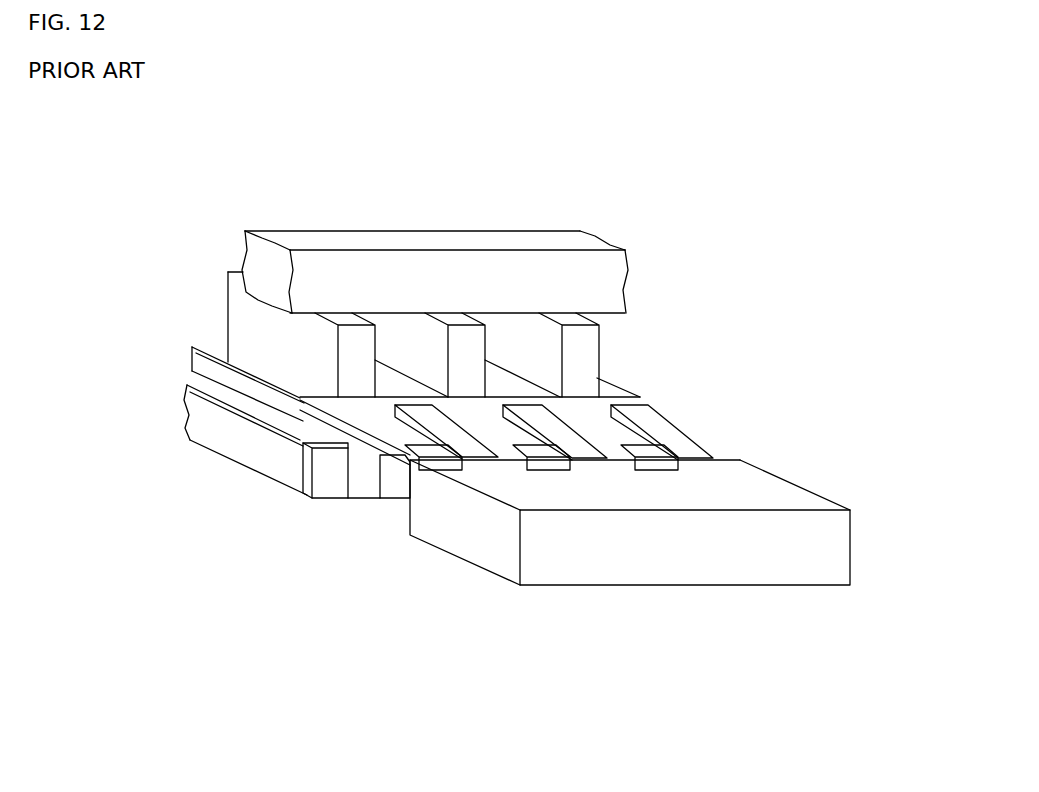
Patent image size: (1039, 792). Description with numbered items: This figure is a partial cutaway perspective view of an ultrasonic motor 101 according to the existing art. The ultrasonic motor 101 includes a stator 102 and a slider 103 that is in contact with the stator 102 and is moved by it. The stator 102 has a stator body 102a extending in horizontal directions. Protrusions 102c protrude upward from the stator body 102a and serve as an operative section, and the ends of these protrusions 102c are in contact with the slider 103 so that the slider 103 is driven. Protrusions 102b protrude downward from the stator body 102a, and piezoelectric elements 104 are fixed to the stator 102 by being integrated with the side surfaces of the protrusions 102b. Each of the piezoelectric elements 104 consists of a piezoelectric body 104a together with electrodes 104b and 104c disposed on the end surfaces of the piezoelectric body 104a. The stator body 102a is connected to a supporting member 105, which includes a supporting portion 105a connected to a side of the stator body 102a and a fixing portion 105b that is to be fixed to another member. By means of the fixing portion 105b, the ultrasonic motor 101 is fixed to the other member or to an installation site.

The ultrasonic motor 101 is at (173, 253).
The stator 102 is at (356, 497).
The stator body 102a is at (217, 350).
The protrusions 102b is at (325, 483).
The protrusions 102c is at (352, 335).
The slider 103 is at (505, 228).
The piezoelectric elements 104 is at (632, 433).
The piezoelectric body 104a is at (605, 428).
The electrode 104b is at (182, 418).
The electrode 104c is at (643, 440).
The supporting member 105 is at (689, 588).
The supporting portion 105a is at (723, 448).
The fixing portion 105b is at (777, 565).